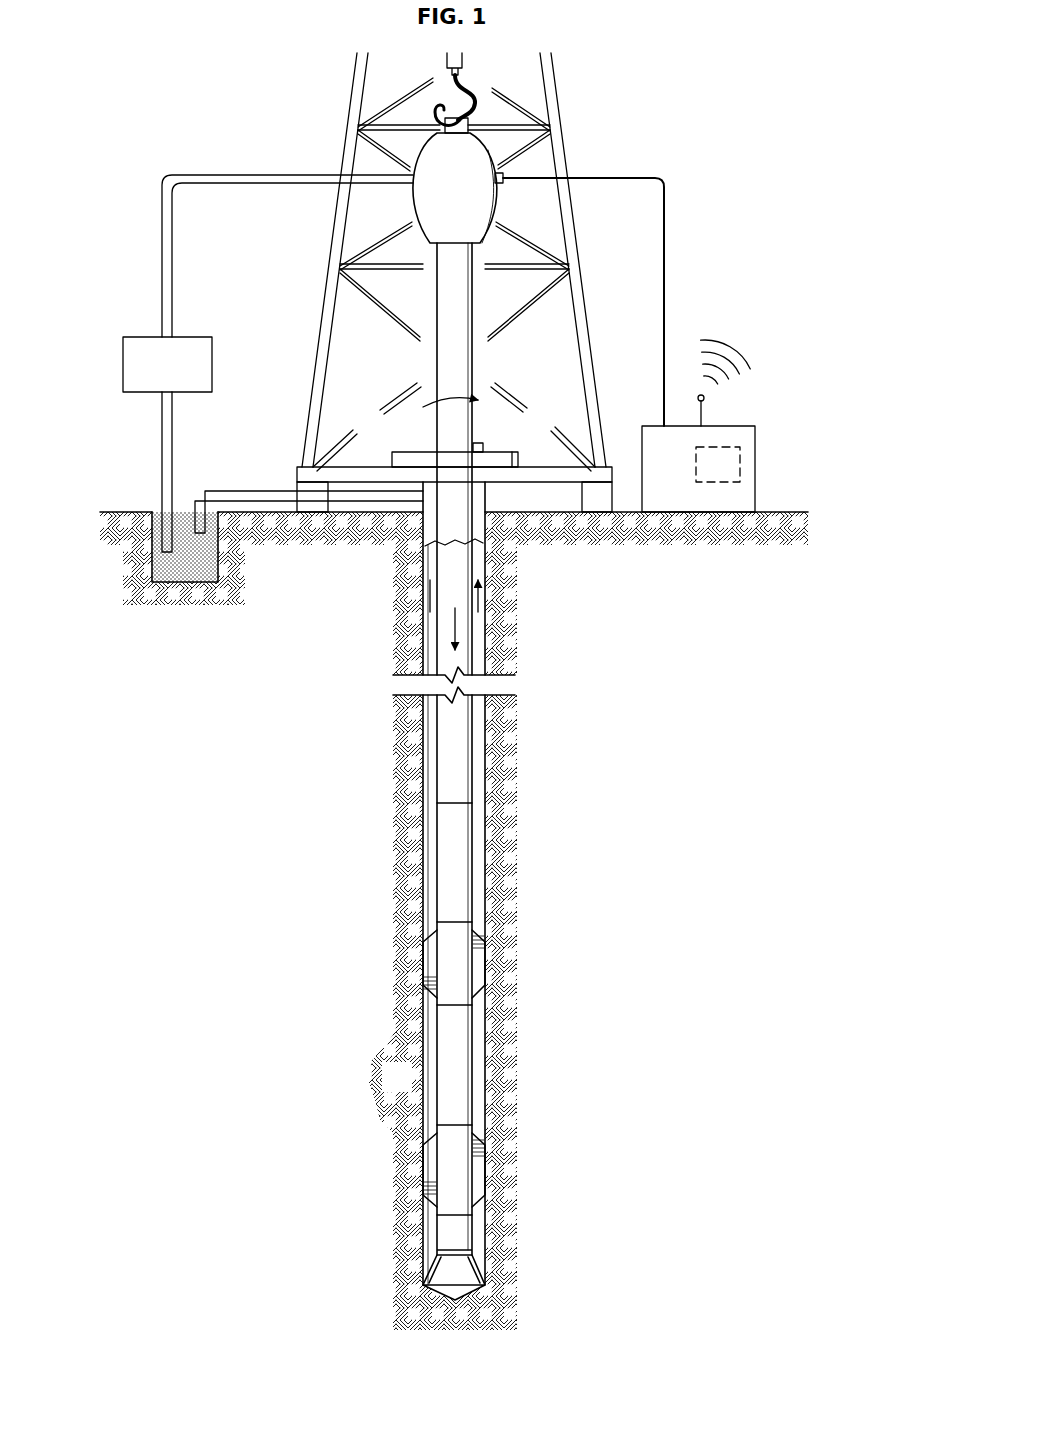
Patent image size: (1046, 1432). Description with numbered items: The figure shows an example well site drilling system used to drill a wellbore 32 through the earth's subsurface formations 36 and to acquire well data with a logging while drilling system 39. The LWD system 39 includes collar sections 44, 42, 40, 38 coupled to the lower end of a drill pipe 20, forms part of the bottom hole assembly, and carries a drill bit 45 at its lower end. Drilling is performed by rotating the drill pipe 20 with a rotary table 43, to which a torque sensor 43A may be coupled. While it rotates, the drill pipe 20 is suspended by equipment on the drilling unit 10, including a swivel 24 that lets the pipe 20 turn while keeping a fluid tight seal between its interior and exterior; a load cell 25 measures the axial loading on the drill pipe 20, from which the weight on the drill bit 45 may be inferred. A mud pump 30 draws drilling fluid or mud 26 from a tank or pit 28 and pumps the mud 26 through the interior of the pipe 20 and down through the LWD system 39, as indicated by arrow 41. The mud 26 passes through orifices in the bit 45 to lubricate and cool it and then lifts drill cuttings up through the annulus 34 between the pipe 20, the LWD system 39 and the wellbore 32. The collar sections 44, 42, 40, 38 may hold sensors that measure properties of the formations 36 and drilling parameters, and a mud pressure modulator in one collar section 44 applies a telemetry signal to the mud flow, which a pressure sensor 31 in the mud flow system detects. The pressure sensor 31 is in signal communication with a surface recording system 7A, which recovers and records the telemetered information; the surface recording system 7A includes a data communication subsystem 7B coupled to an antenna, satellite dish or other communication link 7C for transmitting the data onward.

The drilling unit 10 is at (672, 117).
The drill pipe 20 is at (440, 352).
The swivel 24 is at (467, 200).
The load cell 25 is at (458, 122).
The drilling fluid (mud) 26 is at (190, 570).
The tank or pit 28 is at (185, 492).
The mud pump 30 is at (197, 337).
The pressure sensor 31 is at (503, 183).
The wellbore 32 is at (487, 652).
The annulus 34 is at (430, 598).
The subsurface earth formations 36 is at (411, 1089).
The collar section 38 is at (462, 1172).
The logging while drilling (LWD) system 39 is at (430, 838).
The collar section 40 is at (462, 1062).
The arrow 41 is at (452, 628).
The collar section 42 is at (462, 960).
The rotary table 43 is at (412, 452).
The torque sensor 43A is at (480, 443).
The collar section 44 is at (462, 880).
The drill bit 45 is at (465, 1268).
The surface recording system 7A is at (732, 426).
The data communication subsystem 7B is at (740, 465).
The communication link 7C is at (744, 336).